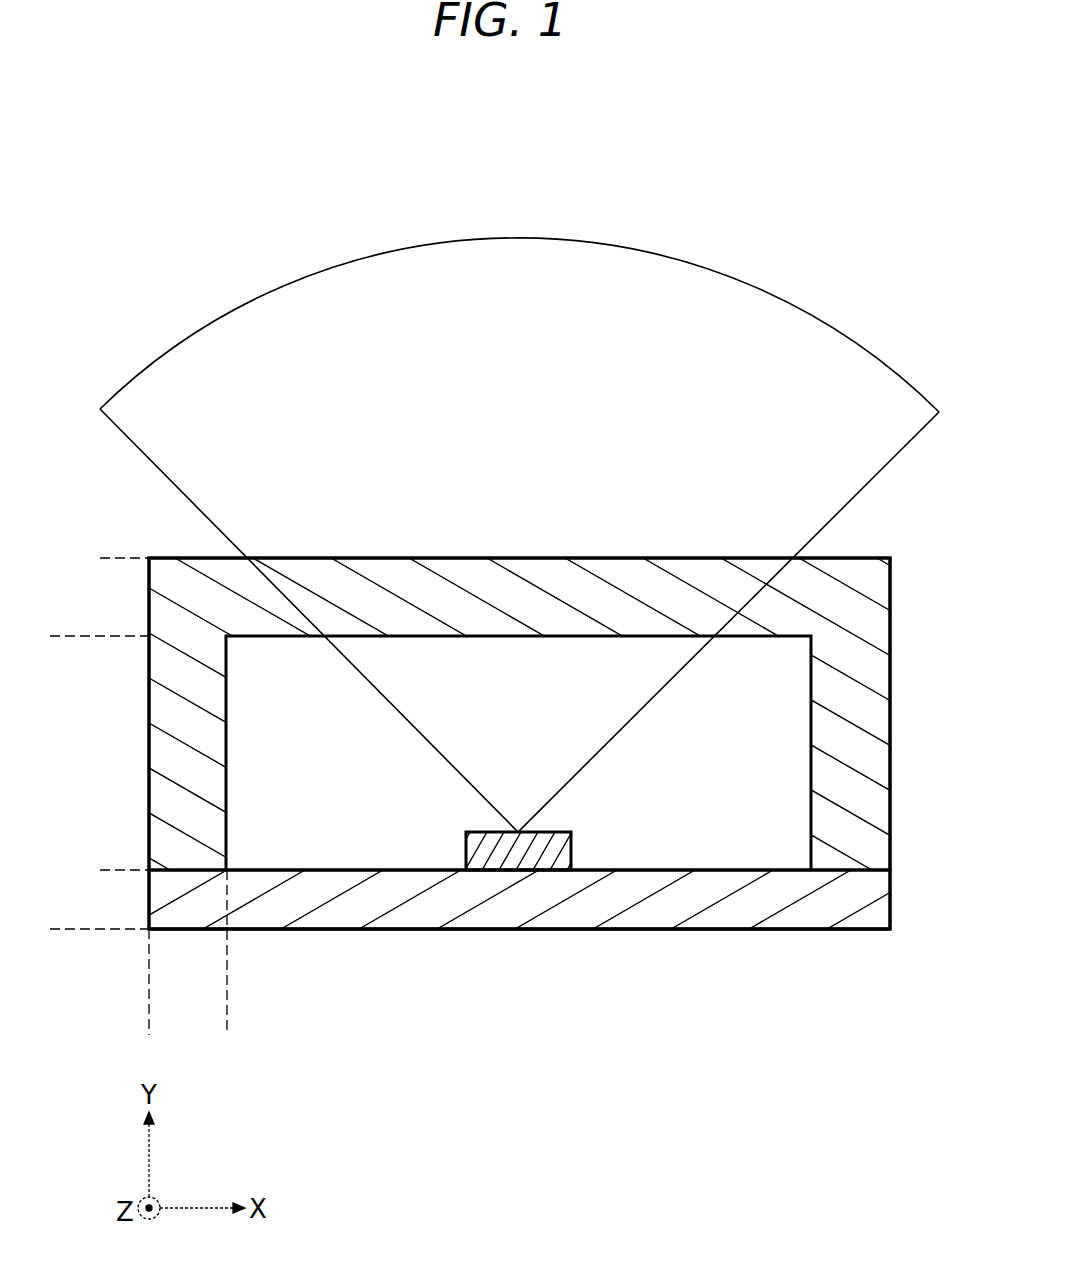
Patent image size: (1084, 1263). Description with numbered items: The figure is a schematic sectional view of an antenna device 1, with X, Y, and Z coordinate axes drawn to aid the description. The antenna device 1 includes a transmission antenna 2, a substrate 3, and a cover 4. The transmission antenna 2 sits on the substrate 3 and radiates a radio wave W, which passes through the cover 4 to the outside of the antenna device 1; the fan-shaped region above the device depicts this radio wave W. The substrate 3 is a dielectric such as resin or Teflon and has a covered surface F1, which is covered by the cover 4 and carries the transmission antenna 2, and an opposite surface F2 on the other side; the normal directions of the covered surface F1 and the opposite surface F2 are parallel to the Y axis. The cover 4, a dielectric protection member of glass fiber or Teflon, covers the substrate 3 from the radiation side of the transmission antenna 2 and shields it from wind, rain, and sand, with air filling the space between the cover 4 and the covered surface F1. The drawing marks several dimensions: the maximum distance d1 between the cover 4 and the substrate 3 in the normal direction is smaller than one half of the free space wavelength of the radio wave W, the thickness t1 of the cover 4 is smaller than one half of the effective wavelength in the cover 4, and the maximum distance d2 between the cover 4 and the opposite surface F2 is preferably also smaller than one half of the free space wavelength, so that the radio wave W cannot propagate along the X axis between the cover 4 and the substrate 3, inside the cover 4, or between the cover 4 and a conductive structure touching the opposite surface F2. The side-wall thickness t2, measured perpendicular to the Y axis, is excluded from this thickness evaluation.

The antenna device 1 is at (807, 242).
The transmission antenna 2 is at (572, 850).
The substrate 3 is at (891, 897).
The cover 4 is at (891, 688).
The radio wave W is at (518, 236).
The covered surface F1 is at (767, 867).
The opposite surface F2 is at (765, 930).
The thickness of the cover t1 is at (126, 558).
The thickness in a direction perpendicular to the Y axis t2 is at (149, 1011).
The maximum distance between the cover and the substrate d1 is at (126, 636).
The maximum distance between the cover and the opposite surface d2 is at (78, 929).